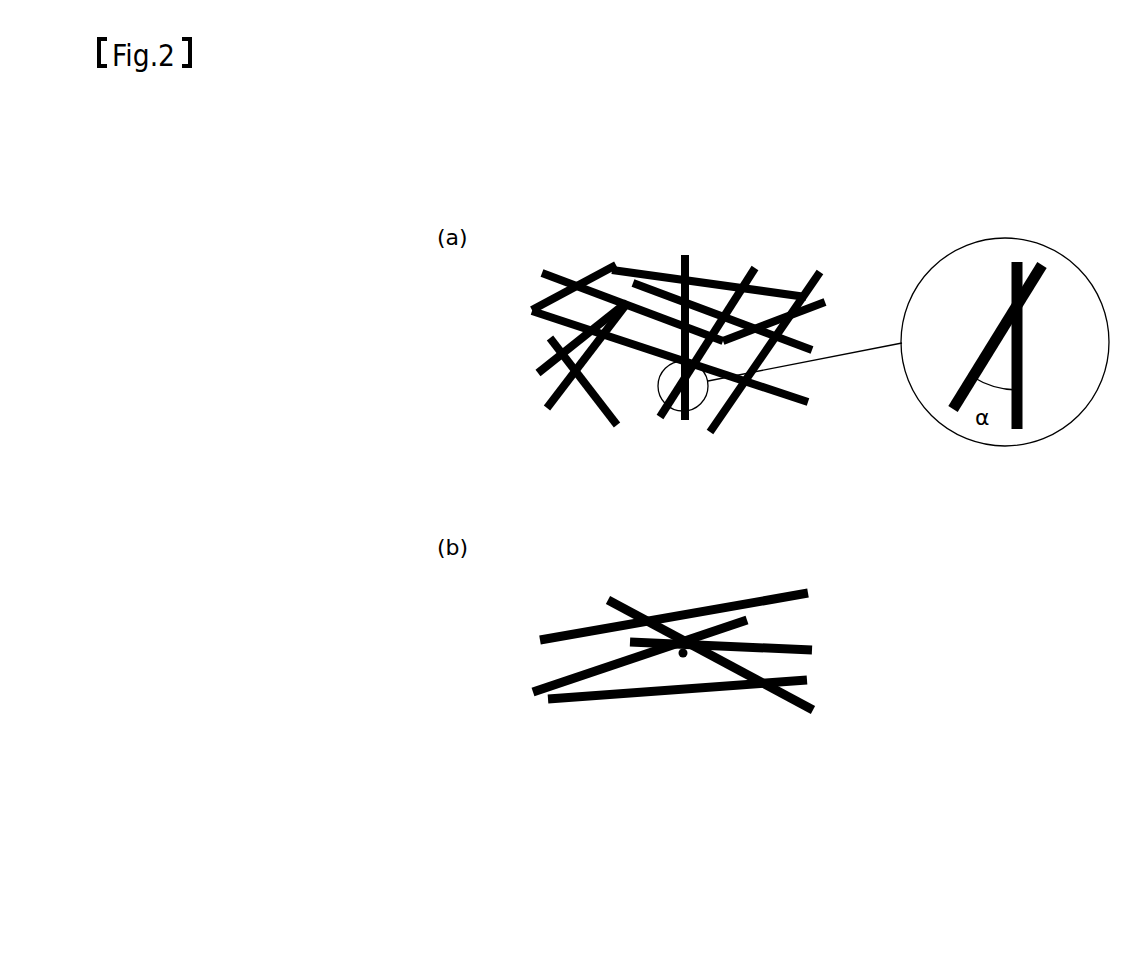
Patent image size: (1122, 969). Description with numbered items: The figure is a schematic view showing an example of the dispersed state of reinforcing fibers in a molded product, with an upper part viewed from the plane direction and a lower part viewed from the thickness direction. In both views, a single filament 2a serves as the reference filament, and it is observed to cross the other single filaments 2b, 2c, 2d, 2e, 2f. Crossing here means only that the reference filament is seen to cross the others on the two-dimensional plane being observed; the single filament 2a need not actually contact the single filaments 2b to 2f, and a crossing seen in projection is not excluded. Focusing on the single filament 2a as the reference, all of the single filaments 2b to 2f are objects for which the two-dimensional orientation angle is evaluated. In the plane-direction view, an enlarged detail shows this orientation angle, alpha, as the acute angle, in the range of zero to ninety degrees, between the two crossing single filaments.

The single filament 2a is at (688, 422).
The single filament 2b is at (660, 422).
The single filament 2c is at (707, 280).
The single filament 2d is at (662, 280).
The single filament 2e is at (812, 406).
The single filament 2f is at (555, 412).